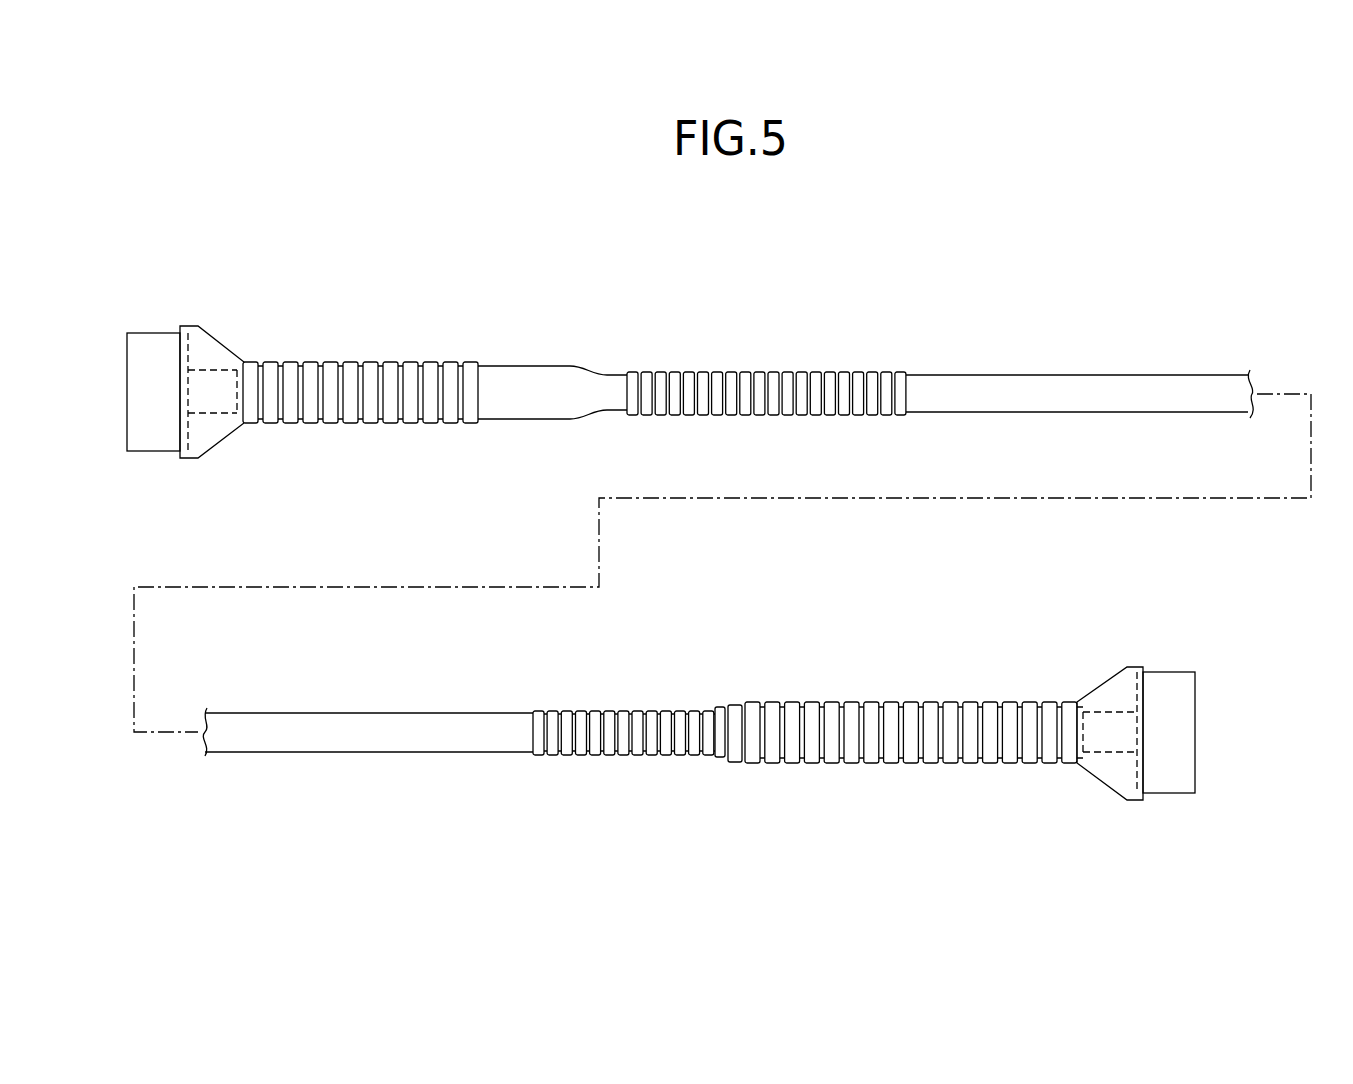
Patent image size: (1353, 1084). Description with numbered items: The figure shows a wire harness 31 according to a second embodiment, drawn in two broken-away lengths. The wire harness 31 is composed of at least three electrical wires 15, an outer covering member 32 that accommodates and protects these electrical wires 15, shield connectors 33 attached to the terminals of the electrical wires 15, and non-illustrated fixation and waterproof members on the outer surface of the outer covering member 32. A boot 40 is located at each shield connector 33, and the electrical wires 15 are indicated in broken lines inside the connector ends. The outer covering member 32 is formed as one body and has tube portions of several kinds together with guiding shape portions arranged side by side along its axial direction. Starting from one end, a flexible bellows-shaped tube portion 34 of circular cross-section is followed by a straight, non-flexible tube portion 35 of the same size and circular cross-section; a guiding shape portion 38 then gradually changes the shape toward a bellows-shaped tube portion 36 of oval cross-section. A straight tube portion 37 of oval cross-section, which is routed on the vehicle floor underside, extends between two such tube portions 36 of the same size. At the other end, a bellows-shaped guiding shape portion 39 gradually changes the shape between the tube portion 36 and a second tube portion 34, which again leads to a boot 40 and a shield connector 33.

The wire harness 31 is at (1003, 254).
The outer covering member 32 is at (1149, 376).
The shield connector 33 is at (157, 440).
The tube portion 34 is at (390, 368).
The tube portion 35 is at (498, 410).
The tube portion 36 is at (803, 372).
The tube portion 37 is at (1035, 383).
The guiding shape portion 38 is at (590, 375).
The guiding shape portion 39 is at (735, 705).
The boot 40 is at (215, 335).
The electrical wire 15 is at (210, 395).